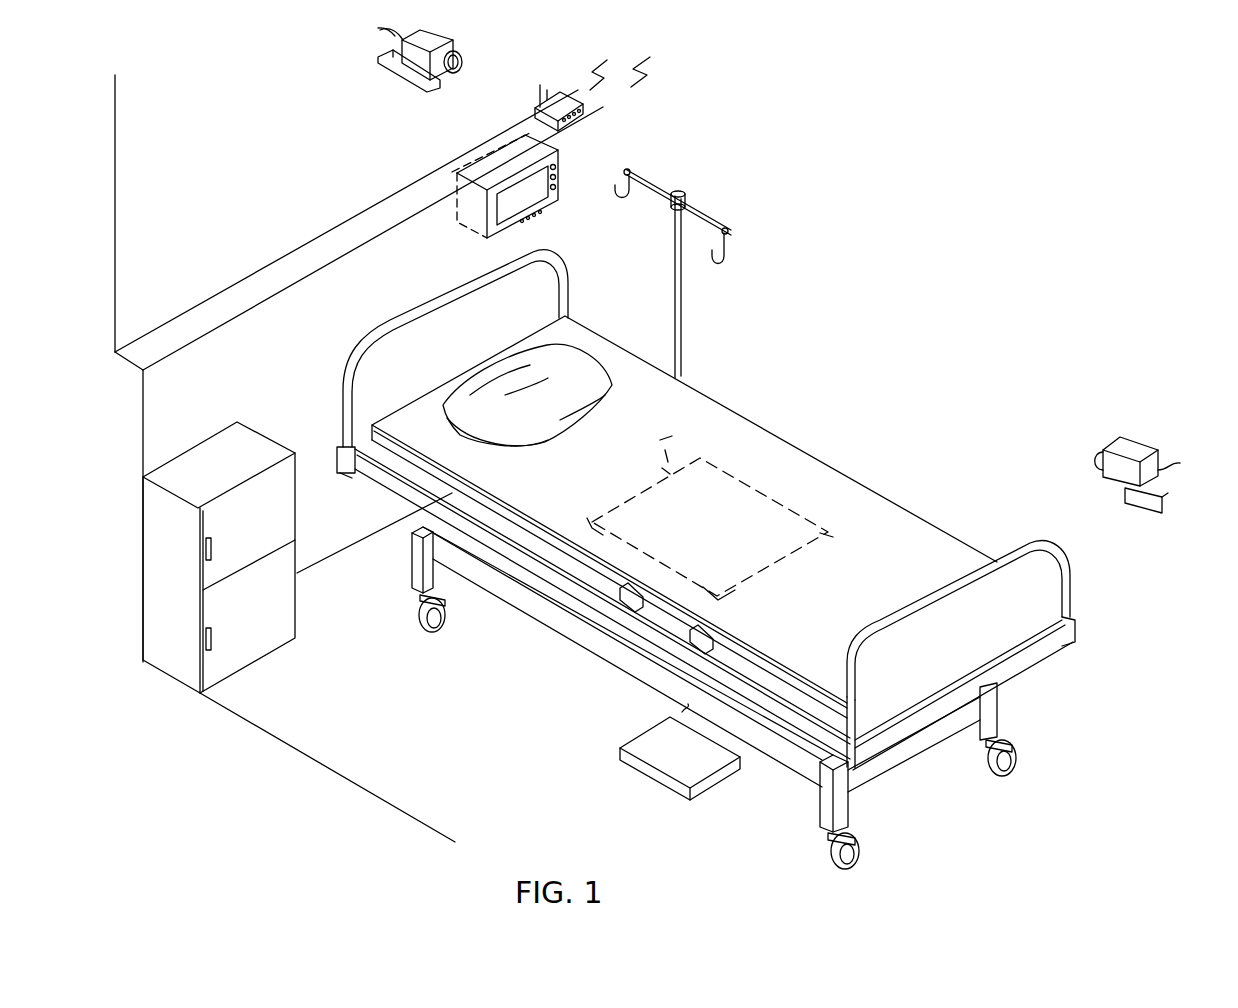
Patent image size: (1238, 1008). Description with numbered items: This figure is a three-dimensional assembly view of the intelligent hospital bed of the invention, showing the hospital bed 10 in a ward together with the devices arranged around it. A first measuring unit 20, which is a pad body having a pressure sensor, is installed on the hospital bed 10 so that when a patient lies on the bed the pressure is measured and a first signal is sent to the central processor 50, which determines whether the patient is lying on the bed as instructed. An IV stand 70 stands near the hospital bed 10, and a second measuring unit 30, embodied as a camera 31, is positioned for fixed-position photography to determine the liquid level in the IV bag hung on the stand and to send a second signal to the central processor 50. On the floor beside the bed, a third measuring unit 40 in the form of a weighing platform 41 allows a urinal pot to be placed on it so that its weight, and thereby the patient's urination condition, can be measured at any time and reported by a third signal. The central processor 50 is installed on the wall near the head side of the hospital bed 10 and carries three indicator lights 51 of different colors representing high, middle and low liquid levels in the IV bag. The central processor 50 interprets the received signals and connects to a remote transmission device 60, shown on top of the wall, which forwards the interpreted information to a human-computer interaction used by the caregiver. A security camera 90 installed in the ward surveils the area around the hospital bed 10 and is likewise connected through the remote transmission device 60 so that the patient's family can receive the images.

The hospital bed 10 is at (1095, 628).
The first measuring unit 20 is at (762, 482).
The second measuring unit 30 is at (383, 80).
The camera 31 is at (373, 73).
The third measuring unit 40 is at (607, 760).
The weighing platform 41 is at (624, 752).
The central processor 50 is at (483, 223).
The indicator lights 51 is at (558, 170).
The remote transmission device 60 is at (558, 78).
The IV stand 70 is at (752, 243).
The security camera 90 is at (1136, 425).